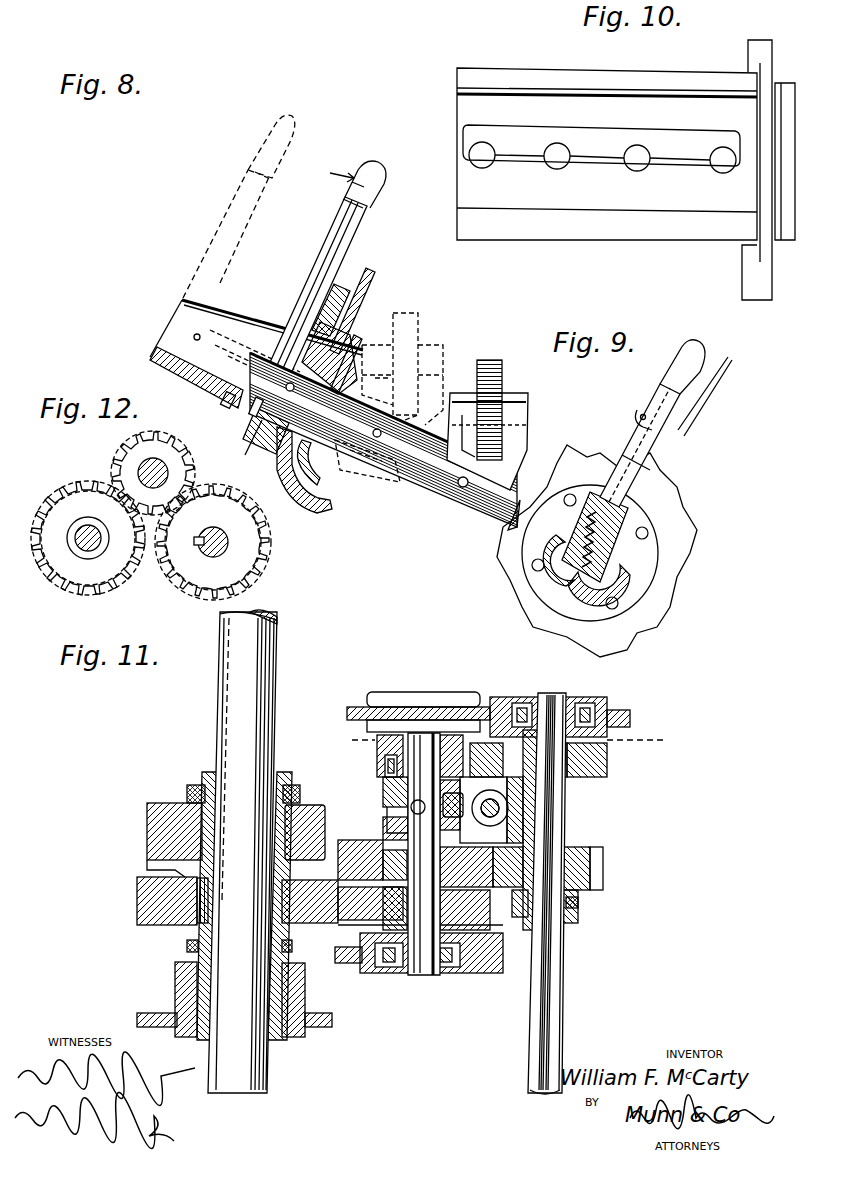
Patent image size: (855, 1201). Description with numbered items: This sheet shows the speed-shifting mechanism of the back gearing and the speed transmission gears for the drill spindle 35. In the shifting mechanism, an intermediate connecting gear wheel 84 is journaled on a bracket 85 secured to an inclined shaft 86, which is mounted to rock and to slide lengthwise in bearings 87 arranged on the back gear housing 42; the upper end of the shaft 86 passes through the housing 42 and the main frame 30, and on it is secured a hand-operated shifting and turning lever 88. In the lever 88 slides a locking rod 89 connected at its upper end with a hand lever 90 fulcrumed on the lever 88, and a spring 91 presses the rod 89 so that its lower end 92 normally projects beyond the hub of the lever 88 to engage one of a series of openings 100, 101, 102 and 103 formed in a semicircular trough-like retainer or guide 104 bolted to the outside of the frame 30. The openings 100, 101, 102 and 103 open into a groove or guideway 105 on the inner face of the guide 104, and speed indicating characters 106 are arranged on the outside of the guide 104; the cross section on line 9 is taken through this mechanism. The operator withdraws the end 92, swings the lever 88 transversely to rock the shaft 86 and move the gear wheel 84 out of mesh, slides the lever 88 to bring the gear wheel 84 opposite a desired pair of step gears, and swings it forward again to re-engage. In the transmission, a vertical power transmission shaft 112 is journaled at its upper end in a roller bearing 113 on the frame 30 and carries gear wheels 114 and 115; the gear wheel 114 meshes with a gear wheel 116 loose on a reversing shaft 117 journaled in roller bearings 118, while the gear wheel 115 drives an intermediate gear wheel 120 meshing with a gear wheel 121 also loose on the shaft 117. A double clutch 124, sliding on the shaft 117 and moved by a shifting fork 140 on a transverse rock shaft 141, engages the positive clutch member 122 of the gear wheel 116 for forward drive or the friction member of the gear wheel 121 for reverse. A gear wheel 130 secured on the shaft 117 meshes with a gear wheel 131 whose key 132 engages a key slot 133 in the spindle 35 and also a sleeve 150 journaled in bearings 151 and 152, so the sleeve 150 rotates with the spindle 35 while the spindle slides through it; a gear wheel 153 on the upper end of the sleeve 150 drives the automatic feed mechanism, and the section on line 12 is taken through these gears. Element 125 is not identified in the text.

In FIG. 8, the section line 9 is at (375, 150).
In FIG. 11, the section line 12 is at (507, 741).
In FIG. 8, the main frame 30 is at (372, 272).
In FIG. 11, the main frame 30 is at (355, 706).
In FIG. 11, the drill spindle 35 is at (232, 697).
In FIG. 8, the back gear housing 42 is at (345, 350).
In FIG. 8, the intermediate connecting gear wheel 84 is at (408, 318).
In FIG. 8, the bracket 85 is at (520, 440).
In FIG. 8, the inclined shaft 86 is at (415, 470).
In FIG. 8, the bearings 87 is at (332, 338).
In FIG. 8, the shifting and turning lever 88 is at (334, 276).
In FIG. 9, the shifting and turning lever 88 is at (650, 458).
In FIG. 9, the locking rod 89 is at (614, 494).
In FIG. 8, the hand lever 90 is at (375, 198).
In FIG. 9, the hand lever 90 is at (692, 410).
In FIG. 9, the spring 91 is at (606, 552).
In FIG. 9, the lower end of locking rod 92 is at (575, 585).
In FIG. 10, the opening 100 is at (723, 170).
In FIG. 8, the opening 100 is at (248, 424).
In FIG. 10, the opening 101 is at (637, 168).
In FIG. 8, the opening 101 is at (224, 397).
In FIG. 10, the opening 102 is at (557, 166).
In FIG. 8, the opening 102 is at (182, 344).
In FIG. 10, the opening 103 is at (482, 165).
In FIG. 8, the opening 103 is at (160, 362).
In FIG. 10, the retainer or guide 104 is at (457, 110).
In FIG. 8, the retainer or guide 104 is at (166, 330).
In FIG. 9, the retainer or guide 104 is at (612, 578).
In FIG. 10, the groove or guideway 105 is at (606, 134).
In FIG. 8, the groove or guideway 105 is at (244, 364).
In FIG. 9, the groove or guideway 105 is at (562, 573).
In FIG. 10, the speed indicating characters 106 is at (588, 242).
In FIG. 12, the power transmission shaft 112 is at (222, 548).
In FIG. 11, the power transmission shaft 112 is at (562, 1000).
In FIG. 11, the roller bearing 113 is at (590, 700).
In FIG. 11, the gear wheel 114 is at (597, 868).
In FIG. 12, the gear wheel 115 is at (260, 540).
In FIG. 11, the gear wheel 115 is at (606, 757).
In FIG. 11, the gear wheel 116 is at (368, 832).
In FIG. 12, the reversing shaft 117 is at (84, 530).
In FIG. 11, the reversing shaft 117 is at (412, 975).
In FIG. 11, the roller bearings 118 is at (462, 700).
In FIG. 12, the intermediate gear wheel 120 is at (142, 465).
In FIG. 11, the intermediate gear wheel 120 is at (485, 740).
In FIG. 12, the gear wheel 121 is at (54, 565).
In FIG. 11, the gear wheel 121 is at (377, 746).
In FIG. 11, the clutch member 122 is at (484, 861).
In FIG. 11, the double clutch 124 is at (383, 797).
In FIG. 11, the washer 125 is at (383, 780).
In FIG. 11, the gear wheel 130 is at (555, 922).
In FIG. 11, the gear wheel 131 is at (138, 902).
In FIG. 11, the key 132 is at (222, 906).
In FIG. 11, the key slot 133 is at (222, 738).
In FIG. 11, the shifting fork 140 is at (470, 790).
In FIG. 11, the rock shaft 141 is at (500, 818).
In FIG. 11, the sleeve 150 is at (180, 987).
In FIG. 11, the bearing 151 is at (303, 996).
In FIG. 11, the bearing 152 is at (190, 812).
In FIG. 11, the gear wheel 153 is at (292, 792).